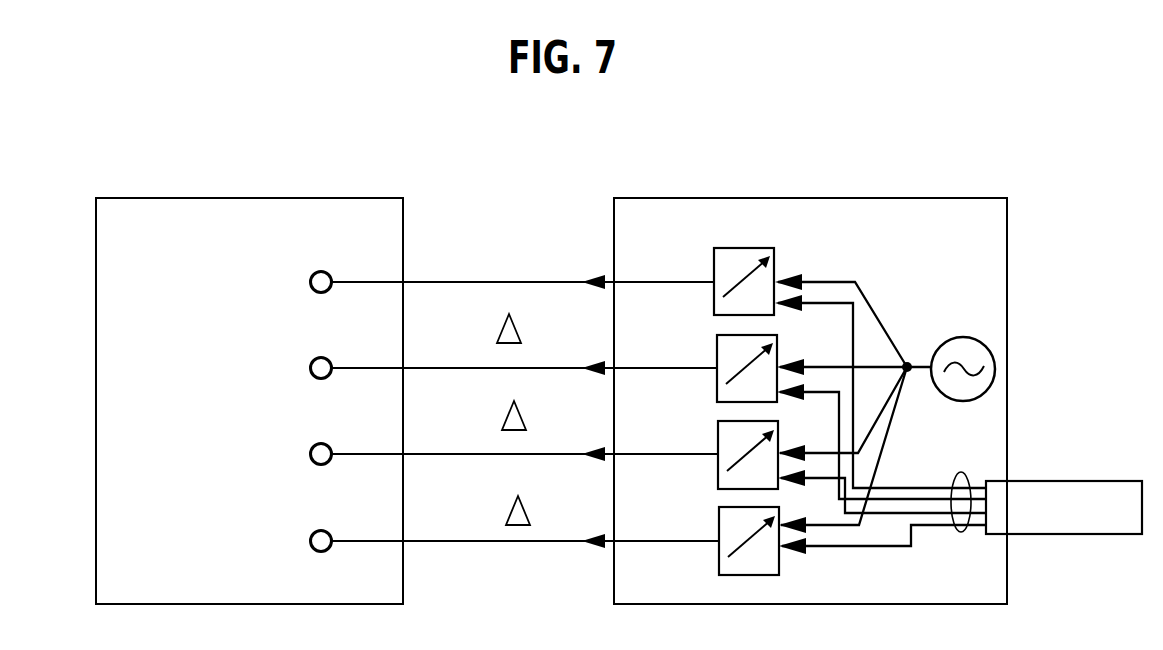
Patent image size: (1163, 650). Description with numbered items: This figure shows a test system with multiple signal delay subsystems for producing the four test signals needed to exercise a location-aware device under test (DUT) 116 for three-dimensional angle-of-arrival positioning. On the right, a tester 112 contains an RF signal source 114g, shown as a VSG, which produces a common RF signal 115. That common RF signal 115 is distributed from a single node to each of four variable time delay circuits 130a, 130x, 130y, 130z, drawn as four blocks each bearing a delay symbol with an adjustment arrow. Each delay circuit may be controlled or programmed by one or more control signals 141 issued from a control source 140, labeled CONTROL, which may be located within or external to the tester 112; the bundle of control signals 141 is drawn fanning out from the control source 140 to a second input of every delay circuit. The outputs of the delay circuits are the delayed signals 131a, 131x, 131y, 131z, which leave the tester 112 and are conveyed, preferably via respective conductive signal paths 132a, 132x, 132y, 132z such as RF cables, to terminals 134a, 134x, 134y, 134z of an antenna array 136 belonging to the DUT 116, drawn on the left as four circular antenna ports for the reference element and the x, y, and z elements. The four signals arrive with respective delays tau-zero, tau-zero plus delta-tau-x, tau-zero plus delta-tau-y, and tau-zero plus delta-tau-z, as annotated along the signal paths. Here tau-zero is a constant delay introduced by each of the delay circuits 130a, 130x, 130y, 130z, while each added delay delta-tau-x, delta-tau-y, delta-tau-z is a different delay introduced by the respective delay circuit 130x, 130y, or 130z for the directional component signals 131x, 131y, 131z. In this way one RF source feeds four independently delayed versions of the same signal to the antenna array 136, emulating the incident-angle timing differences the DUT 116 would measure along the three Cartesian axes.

The tester 112 is at (870, 197).
The RF signal source 114g is at (997, 363).
The common RF signal 115 is at (913, 377).
The DUT 116 is at (255, 197).
The variable time delay circuit 130a is at (740, 247).
The variable time delay circuit 130x is at (713, 334).
The variable time delay circuit 130y is at (718, 420).
The variable time delay circuit 130z is at (719, 506).
The delayed signal 131a is at (658, 281).
The directional component signal 131x is at (660, 367).
The directional component signal 131y is at (686, 453).
The directional component signal 131z is at (688, 541).
The conductive signal path 132a is at (555, 281).
The conductive signal path 132x is at (572, 367).
The conductive signal path 132y is at (558, 453).
The conductive signal path 132z is at (560, 540).
The terminal 134a is at (311, 274).
The terminal 134x is at (311, 360).
The terminal 134y is at (311, 446).
The terminal 134z is at (311, 533).
The antenna array 136 is at (124, 422).
The control source 140 is at (1064, 480).
The control signals 141 is at (961, 532).